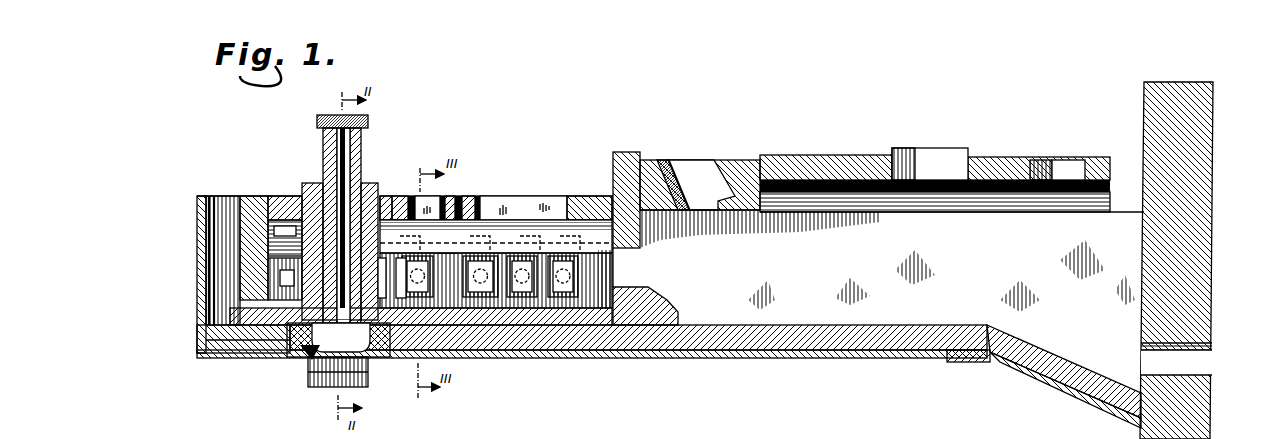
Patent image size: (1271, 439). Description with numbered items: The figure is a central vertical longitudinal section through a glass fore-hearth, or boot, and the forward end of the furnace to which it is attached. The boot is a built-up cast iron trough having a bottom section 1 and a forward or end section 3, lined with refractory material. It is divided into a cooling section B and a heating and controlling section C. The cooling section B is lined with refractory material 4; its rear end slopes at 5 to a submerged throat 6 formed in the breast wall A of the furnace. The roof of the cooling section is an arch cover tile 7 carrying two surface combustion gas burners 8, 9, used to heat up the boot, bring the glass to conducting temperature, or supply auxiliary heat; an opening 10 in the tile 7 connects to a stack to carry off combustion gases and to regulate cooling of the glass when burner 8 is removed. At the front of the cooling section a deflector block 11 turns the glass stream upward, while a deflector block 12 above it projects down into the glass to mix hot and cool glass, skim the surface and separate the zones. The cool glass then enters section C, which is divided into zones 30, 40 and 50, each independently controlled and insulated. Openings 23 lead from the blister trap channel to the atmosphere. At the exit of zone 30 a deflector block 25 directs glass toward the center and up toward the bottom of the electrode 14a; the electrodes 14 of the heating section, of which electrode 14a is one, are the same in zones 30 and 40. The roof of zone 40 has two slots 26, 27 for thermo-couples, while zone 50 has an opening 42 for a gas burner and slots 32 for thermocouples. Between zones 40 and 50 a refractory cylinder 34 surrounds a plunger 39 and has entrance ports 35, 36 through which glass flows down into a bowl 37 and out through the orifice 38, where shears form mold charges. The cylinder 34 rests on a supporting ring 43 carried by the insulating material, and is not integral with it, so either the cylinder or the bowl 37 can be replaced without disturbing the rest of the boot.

The bottom section 1 is at (732, 355).
The forward or end section 3 is at (197, 270).
The refractory material 4 is at (860, 337).
The sloping rear end 5 is at (1053, 375).
The submerged throat 6 is at (1212, 356).
The arch cover tile 7 is at (1000, 162).
The surface combustion gas burner 8 is at (687, 172).
The surface combustion gas burner 9 is at (1057, 172).
The opening 10 is at (927, 152).
The deflector block 11 is at (653, 297).
The deflector block 12 is at (640, 215).
The distributing chamber 14 is at (528, 262).
The electrode 14a is at (425, 205).
The openings 23 is at (512, 200).
The deflector block 25 is at (458, 300).
The slot 26 is at (452, 197).
The slot 27 is at (430, 197).
The zone 30 is at (540, 300).
The slots 32 is at (300, 180).
The cylinder 34 is at (265, 234).
The entrance port 35 is at (310, 280).
The entrance port 36 is at (380, 300).
The bowl 37 is at (315, 345).
The orifice 38 is at (325, 362).
The plunger 39 is at (323, 142).
The zone 40 is at (405, 300).
The opening 42 is at (282, 213).
The supporting ring 43 is at (307, 300).
The zone 50 is at (300, 298).
The breast wall A is at (1210, 195).
The cooling section B is at (793, 228).
The heating and controlling section C is at (520, 240).